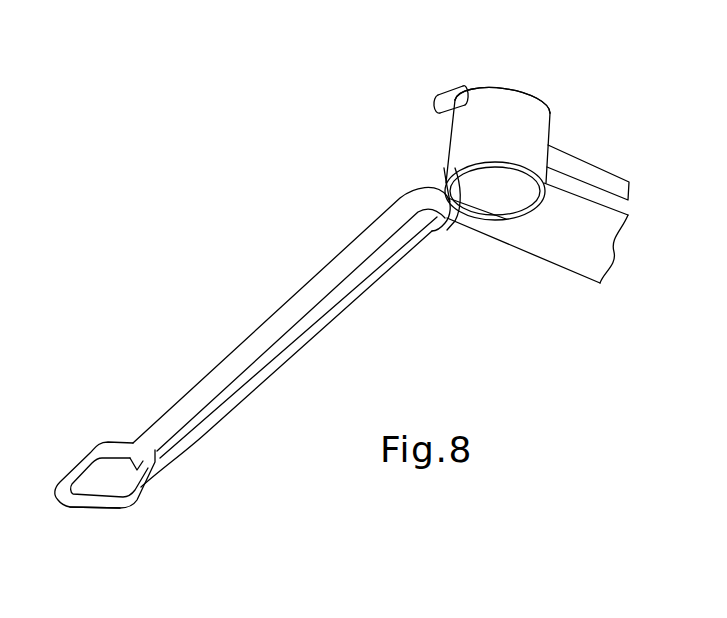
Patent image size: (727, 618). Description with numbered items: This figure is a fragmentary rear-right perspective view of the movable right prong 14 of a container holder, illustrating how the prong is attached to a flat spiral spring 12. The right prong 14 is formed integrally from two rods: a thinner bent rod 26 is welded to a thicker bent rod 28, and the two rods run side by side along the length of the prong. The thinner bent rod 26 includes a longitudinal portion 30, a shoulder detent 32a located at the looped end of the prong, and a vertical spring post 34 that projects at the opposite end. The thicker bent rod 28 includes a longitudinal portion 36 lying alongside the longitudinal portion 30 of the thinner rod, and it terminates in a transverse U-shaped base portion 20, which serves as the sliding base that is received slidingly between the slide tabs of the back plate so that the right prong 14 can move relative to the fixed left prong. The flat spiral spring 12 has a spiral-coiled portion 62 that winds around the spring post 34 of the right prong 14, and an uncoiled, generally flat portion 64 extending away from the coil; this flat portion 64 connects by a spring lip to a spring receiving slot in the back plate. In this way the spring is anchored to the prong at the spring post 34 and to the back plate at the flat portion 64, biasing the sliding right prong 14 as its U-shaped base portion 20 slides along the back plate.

The flat spiral spring 12 is at (525, 90).
The right prong 14 is at (95, 428).
The U-shaped base portion 20 is at (590, 165).
The thinner bent rod 26 is at (340, 317).
The thicker bent rod 28 is at (307, 284).
The longitudinal portion 30 is at (250, 394).
The shoulder detent 32a is at (135, 509).
The vertical spring post 34 is at (465, 86).
The longitudinal portion 36 is at (197, 387).
The spiral-coiled portion 62 is at (482, 133).
The flat portion 64 is at (563, 228).